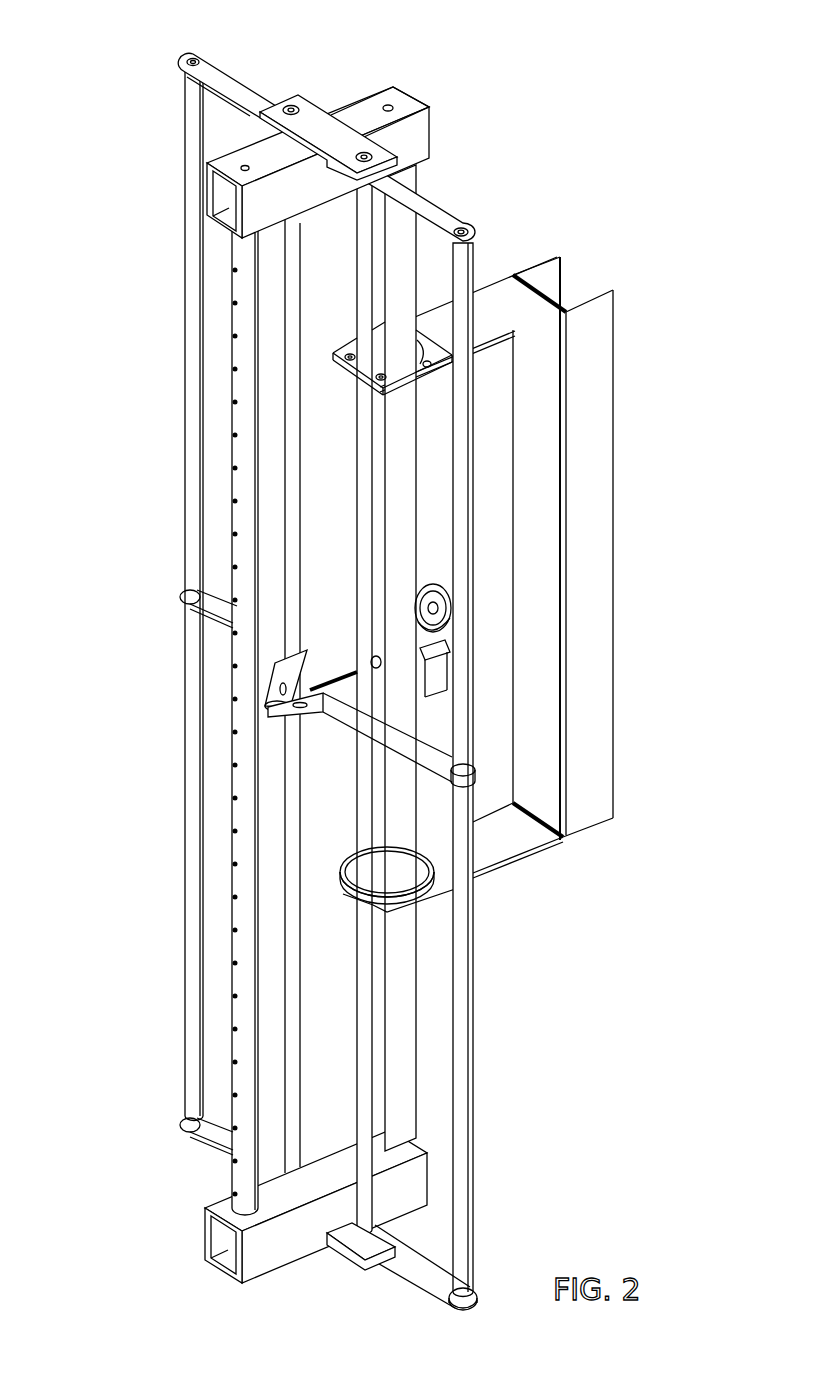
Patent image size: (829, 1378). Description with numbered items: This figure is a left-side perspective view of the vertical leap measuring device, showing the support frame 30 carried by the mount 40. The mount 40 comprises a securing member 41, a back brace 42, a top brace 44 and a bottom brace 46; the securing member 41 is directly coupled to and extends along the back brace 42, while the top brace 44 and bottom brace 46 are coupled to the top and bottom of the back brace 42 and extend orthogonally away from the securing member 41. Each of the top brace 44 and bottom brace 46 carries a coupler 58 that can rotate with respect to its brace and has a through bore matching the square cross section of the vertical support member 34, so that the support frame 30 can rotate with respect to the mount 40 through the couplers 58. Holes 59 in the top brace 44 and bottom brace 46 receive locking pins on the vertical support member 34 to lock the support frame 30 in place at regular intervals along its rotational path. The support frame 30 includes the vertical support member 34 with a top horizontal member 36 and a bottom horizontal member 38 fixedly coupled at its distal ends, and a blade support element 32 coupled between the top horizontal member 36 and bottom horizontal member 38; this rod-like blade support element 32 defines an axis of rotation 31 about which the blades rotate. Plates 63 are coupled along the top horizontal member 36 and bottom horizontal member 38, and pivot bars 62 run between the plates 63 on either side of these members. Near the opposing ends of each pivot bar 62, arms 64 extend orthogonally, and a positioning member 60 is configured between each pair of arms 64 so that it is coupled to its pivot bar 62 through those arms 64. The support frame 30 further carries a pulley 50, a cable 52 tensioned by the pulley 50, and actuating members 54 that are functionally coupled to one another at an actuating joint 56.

The support frame 30 is at (444, 128).
The axis of rotation 31 is at (244, 166).
The blade support element 32 is at (240, 850).
The vertical support member 34 is at (405, 280).
The top horizontal member 36 is at (365, 108).
The bottom horizontal member 38 is at (278, 1255).
The mount 40 is at (555, 547).
The securing member 41 is at (597, 545).
The back brace 42 is at (548, 393).
The top brace 44 is at (500, 300).
The bottom brace 46 is at (515, 845).
The pulley 50 is at (442, 603).
The cable 52 is at (348, 672).
The actuating members 54 is at (215, 612).
The actuating joint 56 is at (268, 697).
The coupler 58 is at (490, 615).
The holes 59 is at (350, 353).
The positioning member 60 is at (190, 370).
The pivot bar 62 is at (367, 950).
The plate 63 is at (323, 118).
The arm 64 is at (232, 77).